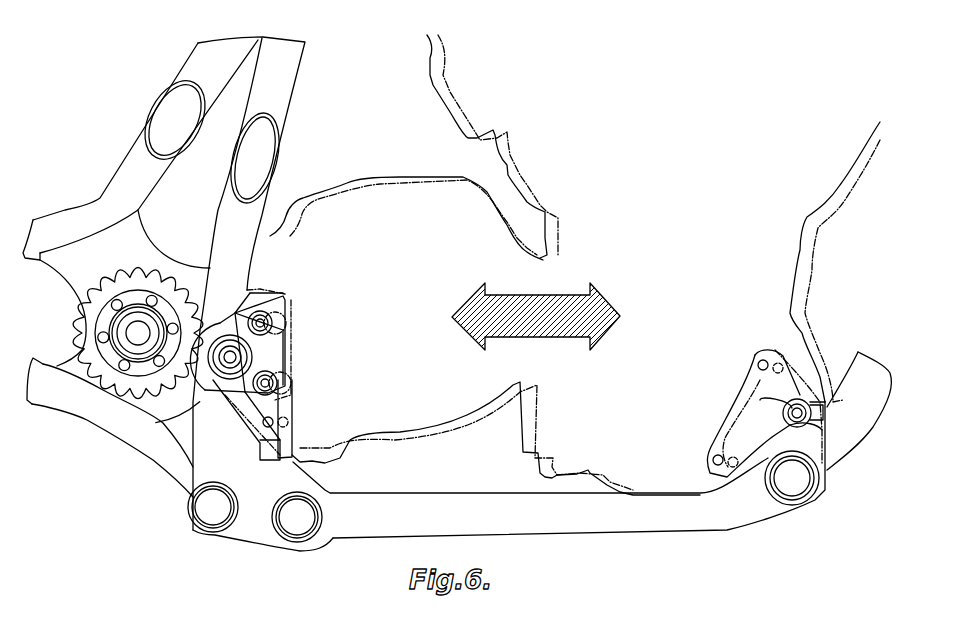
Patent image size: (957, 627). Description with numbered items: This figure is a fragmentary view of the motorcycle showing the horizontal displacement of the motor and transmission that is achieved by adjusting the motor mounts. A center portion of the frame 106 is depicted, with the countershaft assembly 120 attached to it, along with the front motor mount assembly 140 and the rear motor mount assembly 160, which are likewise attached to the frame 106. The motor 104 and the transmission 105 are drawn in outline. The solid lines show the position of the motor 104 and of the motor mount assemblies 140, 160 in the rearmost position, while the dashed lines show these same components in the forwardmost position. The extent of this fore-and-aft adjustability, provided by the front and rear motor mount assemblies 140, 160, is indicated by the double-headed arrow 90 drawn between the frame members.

The arrow 90 is at (540, 293).
The motor 104 is at (433, 88).
The transmission 105 is at (355, 185).
The frame 106 is at (97, 203).
The countershaft assembly 120 is at (100, 384).
The front motor mount assembly 140 is at (748, 407).
The rear motor mount assembly 160 is at (225, 410).